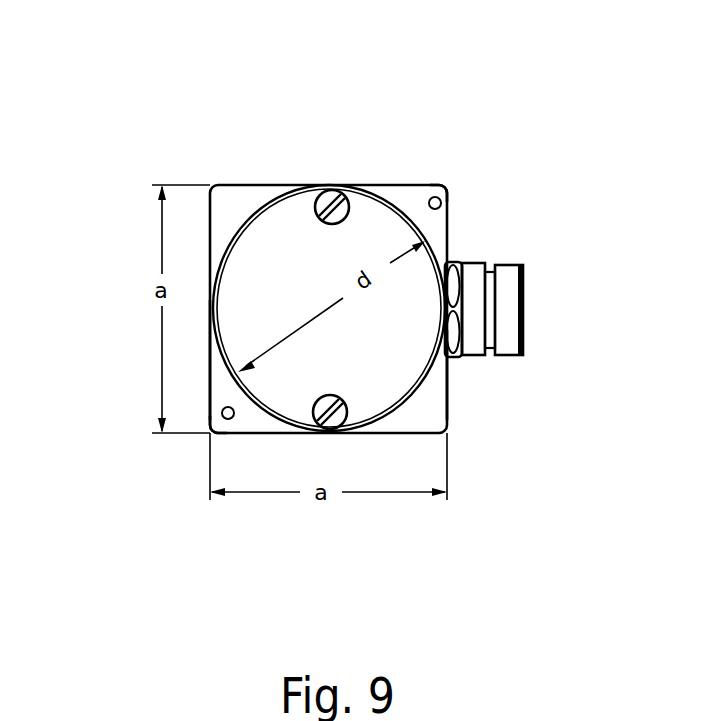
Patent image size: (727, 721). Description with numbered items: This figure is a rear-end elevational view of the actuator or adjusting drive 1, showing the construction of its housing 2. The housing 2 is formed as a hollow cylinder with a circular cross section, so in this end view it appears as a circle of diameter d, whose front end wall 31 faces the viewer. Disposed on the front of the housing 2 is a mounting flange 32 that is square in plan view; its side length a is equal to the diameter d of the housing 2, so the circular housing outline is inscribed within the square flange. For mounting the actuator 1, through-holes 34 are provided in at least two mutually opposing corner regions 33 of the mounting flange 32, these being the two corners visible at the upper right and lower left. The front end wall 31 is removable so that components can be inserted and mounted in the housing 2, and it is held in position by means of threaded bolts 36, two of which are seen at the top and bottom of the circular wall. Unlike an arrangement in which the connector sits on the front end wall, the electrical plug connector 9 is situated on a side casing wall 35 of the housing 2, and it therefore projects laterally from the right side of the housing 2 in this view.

The actuator or adjusting drive 1 is at (404, 158).
The housing 2 is at (293, 160).
The electrical plug connector 9 is at (507, 292).
The front end wall 31 is at (267, 232).
The mounting flange 32 is at (220, 383).
The corner regions 33 is at (442, 183).
The through-holes 34 is at (443, 203).
The side casing wall 35 is at (448, 368).
The threaded bolts 36 is at (322, 187).